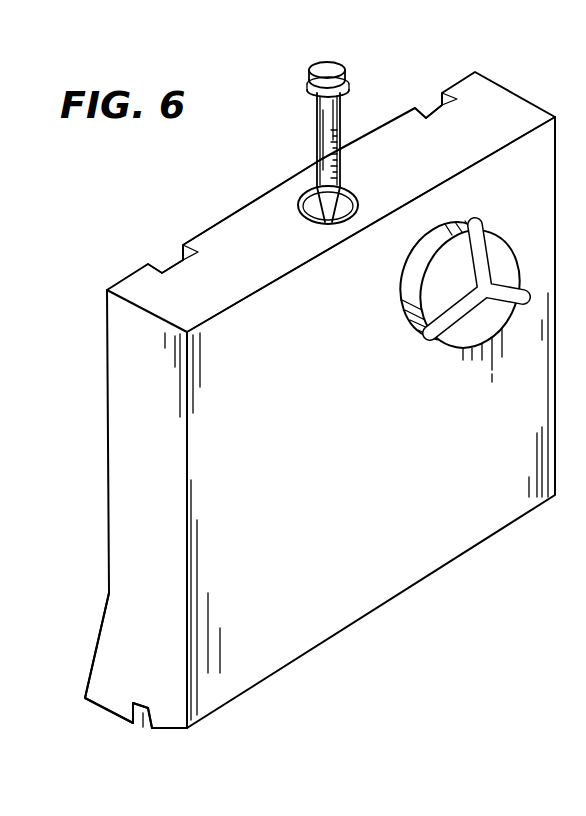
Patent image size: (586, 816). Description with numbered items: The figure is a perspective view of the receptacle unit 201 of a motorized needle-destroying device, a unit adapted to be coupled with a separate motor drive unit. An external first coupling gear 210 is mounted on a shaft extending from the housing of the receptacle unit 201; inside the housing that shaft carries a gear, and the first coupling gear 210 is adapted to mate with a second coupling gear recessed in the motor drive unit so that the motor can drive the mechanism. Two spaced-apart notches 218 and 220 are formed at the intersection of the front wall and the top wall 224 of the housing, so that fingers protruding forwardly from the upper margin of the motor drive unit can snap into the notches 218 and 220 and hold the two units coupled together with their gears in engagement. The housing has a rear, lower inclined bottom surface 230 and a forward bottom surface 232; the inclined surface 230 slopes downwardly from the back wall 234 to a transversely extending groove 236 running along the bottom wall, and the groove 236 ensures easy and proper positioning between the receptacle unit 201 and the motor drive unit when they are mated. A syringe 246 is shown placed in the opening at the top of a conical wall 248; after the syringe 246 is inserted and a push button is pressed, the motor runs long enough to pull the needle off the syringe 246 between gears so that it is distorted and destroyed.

The receptacle unit 201 is at (322, 478).
The first coupling gear 210 is at (510, 249).
The notch 218 is at (170, 260).
The notch 220 is at (438, 107).
The top wall 224 is at (257, 240).
The rear lower inclined bottom surface 230 is at (170, 732).
The forward bottom surface 232 is at (108, 715).
The back wall 234 is at (295, 562).
The groove 236 is at (145, 715).
The syringe 246 is at (343, 112).
The conical wall 248 is at (343, 193).